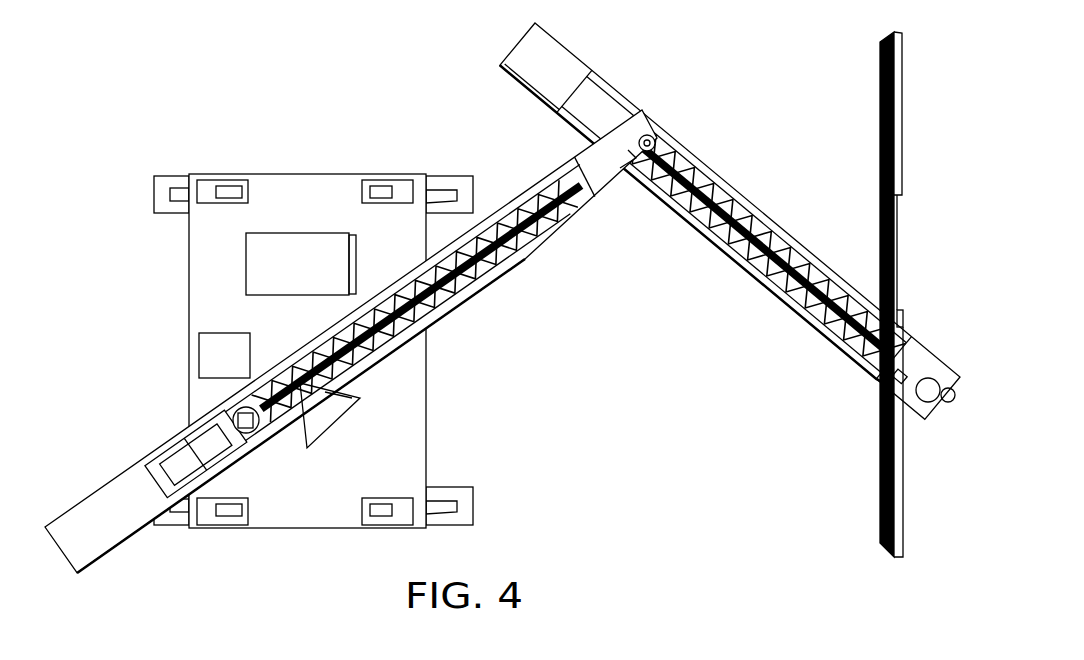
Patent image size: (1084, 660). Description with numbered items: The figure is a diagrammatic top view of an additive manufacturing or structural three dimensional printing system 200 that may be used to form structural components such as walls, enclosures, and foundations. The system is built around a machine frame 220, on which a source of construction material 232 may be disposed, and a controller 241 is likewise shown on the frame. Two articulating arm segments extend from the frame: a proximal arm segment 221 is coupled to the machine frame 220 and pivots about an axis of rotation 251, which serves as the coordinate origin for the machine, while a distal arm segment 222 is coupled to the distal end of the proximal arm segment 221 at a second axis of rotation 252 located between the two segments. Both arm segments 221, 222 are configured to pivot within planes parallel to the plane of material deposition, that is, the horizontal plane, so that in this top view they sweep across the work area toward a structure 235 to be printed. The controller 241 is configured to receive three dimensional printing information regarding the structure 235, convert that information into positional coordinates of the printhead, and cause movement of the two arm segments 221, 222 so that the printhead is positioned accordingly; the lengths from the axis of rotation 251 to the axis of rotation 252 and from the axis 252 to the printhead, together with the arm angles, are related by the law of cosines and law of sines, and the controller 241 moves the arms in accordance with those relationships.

The printing system 200 is at (258, 133).
The machine frame 220 is at (427, 405).
The proximal arm segment 221 is at (508, 268).
The distal arm segment 222 is at (717, 247).
The source of construction material 232 is at (320, 279).
The structure 235 is at (868, 438).
The controller 241 is at (217, 364).
The axis of rotation 251 is at (257, 431).
The axis of rotation 252 is at (652, 137).